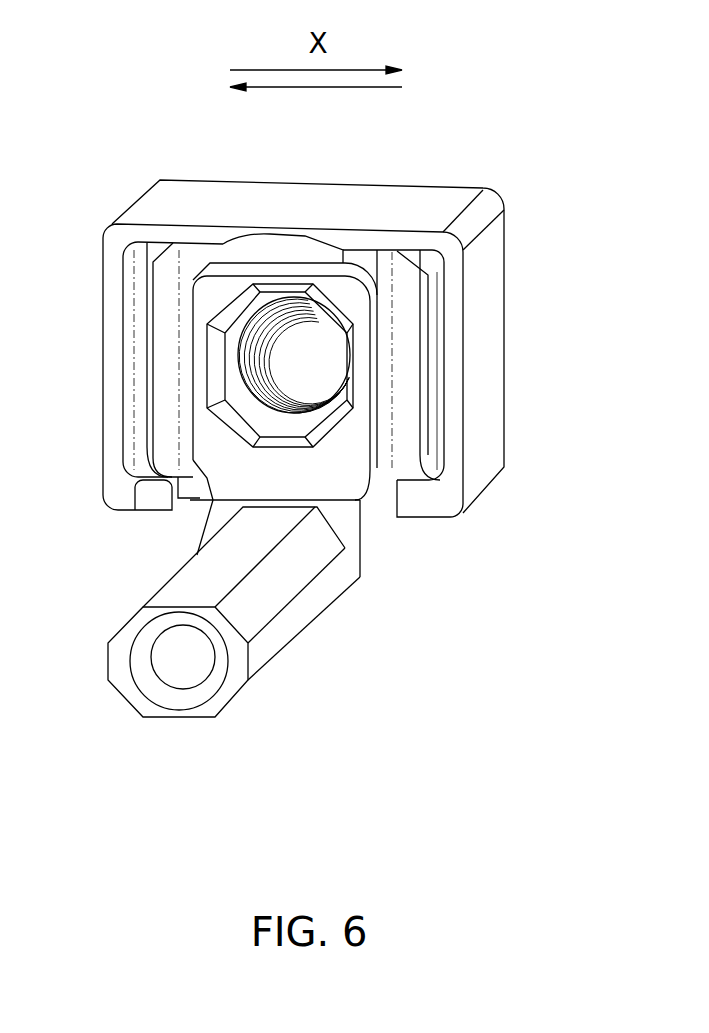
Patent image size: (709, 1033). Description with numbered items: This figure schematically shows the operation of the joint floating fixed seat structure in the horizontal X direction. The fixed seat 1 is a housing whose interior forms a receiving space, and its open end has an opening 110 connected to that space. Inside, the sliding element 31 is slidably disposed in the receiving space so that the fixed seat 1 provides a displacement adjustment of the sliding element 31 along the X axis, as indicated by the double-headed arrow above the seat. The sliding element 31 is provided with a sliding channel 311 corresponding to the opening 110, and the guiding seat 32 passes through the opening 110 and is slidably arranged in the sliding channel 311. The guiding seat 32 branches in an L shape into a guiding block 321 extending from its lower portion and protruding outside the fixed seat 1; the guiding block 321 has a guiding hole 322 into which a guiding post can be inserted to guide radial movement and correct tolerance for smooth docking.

The fixed seat 1 is at (487, 184).
The opening 110 is at (150, 292).
The sliding element 31 is at (178, 445).
The sliding channel 311 is at (290, 263).
The guiding seat 32 is at (334, 486).
The guiding block 321 is at (305, 618).
The guiding hole 322 is at (183, 657).